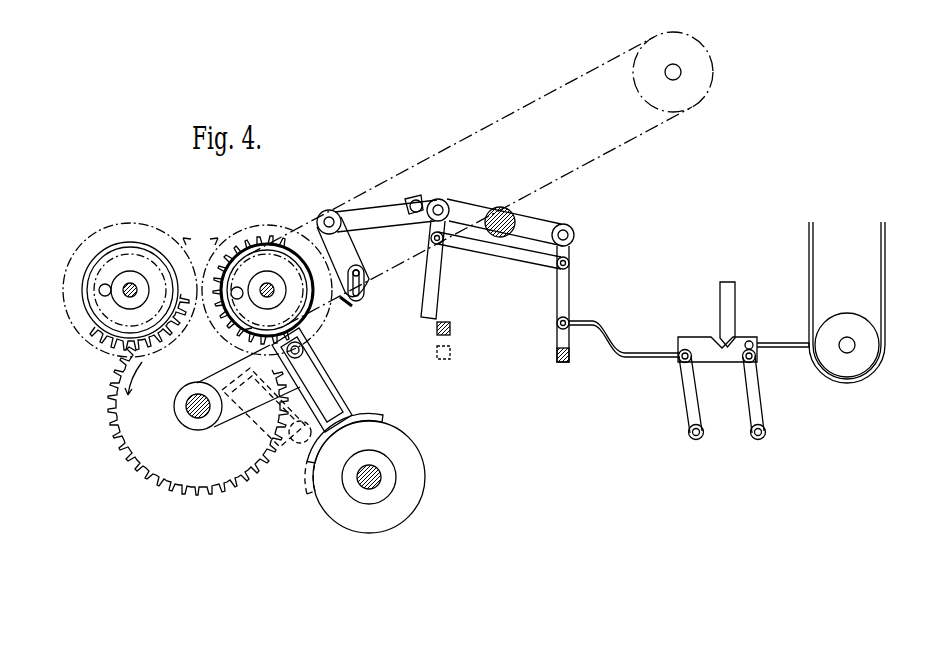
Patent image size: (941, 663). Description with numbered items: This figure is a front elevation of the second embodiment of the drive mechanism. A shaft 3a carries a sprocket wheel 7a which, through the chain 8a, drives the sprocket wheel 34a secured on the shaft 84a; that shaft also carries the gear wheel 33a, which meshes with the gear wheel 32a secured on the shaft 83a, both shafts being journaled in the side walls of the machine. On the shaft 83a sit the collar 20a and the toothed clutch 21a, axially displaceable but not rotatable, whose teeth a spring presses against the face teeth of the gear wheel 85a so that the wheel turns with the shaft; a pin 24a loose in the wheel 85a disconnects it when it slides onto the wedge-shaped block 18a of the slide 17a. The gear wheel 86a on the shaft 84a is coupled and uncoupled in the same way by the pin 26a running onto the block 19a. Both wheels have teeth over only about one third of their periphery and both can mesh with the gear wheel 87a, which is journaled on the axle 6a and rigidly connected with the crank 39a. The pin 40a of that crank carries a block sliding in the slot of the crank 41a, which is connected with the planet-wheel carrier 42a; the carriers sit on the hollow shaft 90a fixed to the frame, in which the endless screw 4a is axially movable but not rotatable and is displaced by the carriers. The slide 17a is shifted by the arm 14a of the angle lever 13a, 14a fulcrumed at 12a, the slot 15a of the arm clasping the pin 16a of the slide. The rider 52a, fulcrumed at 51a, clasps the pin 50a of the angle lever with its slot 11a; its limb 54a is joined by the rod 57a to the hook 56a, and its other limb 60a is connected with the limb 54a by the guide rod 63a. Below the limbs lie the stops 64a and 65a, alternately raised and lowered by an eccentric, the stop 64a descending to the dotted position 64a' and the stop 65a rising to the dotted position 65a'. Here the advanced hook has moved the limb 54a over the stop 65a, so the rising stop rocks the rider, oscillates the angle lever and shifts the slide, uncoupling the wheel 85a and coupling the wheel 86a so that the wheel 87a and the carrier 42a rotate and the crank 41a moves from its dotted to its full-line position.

The shaft 3a is at (673, 65).
The sprocket wheel 7a is at (704, 56).
The chain 8a is at (598, 53).
The slot 11a is at (408, 193).
The fulcrum 12a is at (340, 213).
The angle lever 13a is at (378, 211).
The arm of angle lever 14a is at (333, 228).
The slot 15a is at (352, 262).
The pin 16a is at (357, 279).
The slide 17a is at (335, 293).
The wedge-shaped block 18a is at (107, 269).
The wedge-shaped block 19a is at (252, 244).
The collar 20a is at (141, 282).
The toothed clutch 21a is at (120, 239).
The pin 24a is at (95, 279).
The pin 26a is at (208, 243).
The gear wheel 32a is at (160, 218).
The gear wheel 33a is at (267, 234).
The sprocket wheel 34a is at (230, 279).
The crank 39a is at (266, 407).
The pin 40a is at (296, 343).
The crank 41a is at (320, 383).
The planet-wheel carrier 42a is at (407, 439).
The worm or endless screw 4a is at (373, 470).
The axle 6a is at (195, 411).
The pin 50a is at (428, 212).
The fulcrum 51a is at (498, 205).
The rider 52a is at (545, 226).
The limb 54a is at (561, 291).
The hook 56a is at (739, 324).
The rod 57a is at (632, 346).
The limb 60a is at (426, 284).
The guide rod 63a is at (497, 246).
The stop 64a is at (464, 331).
The lowered position of stop 64a' is at (466, 358).
The stop 65a is at (576, 368).
The raised position of stop 65a' is at (545, 327).
The shaft 83a is at (122, 284).
The shaft 84a is at (258, 283).
The gear wheel 85a is at (102, 334).
The gear wheel 86a is at (242, 321).
The gear wheel 87a is at (245, 463).
The bushing or hollow shaft 90a is at (360, 450).